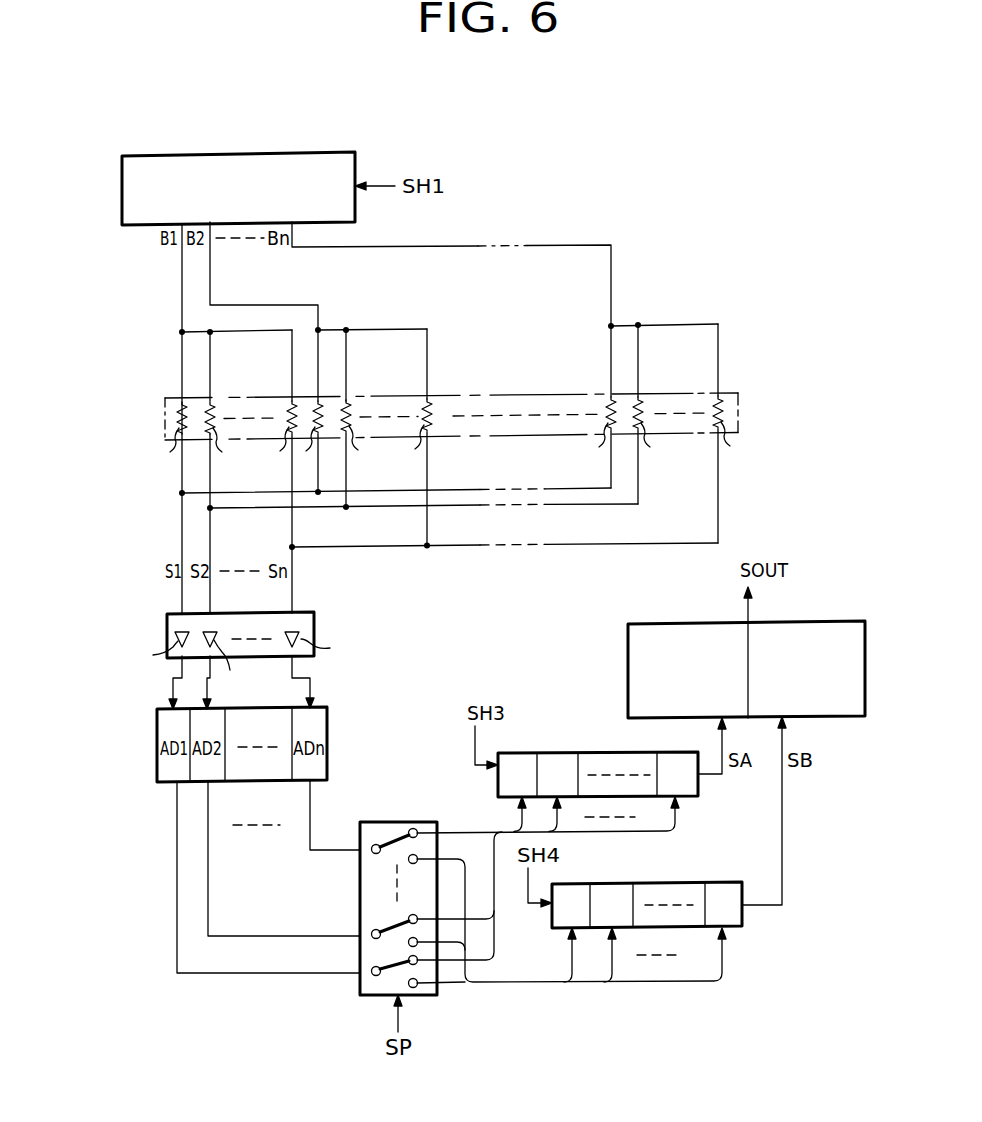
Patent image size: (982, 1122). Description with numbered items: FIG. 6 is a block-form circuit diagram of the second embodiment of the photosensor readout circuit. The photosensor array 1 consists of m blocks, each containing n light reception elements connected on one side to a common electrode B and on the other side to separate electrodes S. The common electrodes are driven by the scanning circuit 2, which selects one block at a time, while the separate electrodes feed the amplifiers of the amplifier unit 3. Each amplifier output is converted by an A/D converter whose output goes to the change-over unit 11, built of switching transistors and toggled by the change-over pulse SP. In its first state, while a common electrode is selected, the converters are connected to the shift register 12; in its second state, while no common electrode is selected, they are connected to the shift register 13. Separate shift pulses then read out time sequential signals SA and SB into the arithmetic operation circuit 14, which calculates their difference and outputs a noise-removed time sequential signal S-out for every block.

The photosensor array 1 is at (165, 418).
The scanning circuit 2 is at (237, 155).
The amplifier unit 3 is at (167, 626).
The change-over unit 11 is at (395, 822).
The shift register 12 is at (590, 753).
The shift register 13 is at (687, 882).
The arithmetic operation circuit 14 is at (628, 666).